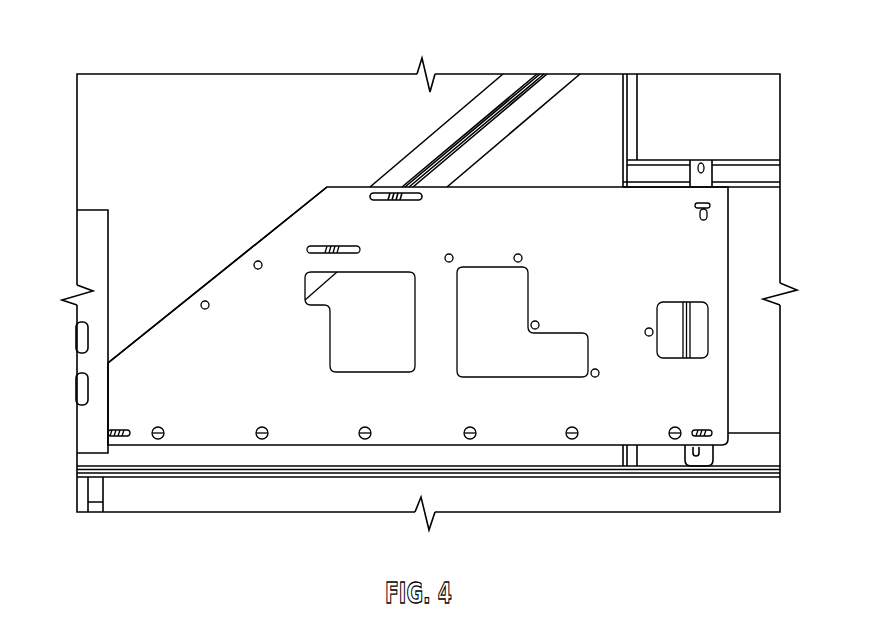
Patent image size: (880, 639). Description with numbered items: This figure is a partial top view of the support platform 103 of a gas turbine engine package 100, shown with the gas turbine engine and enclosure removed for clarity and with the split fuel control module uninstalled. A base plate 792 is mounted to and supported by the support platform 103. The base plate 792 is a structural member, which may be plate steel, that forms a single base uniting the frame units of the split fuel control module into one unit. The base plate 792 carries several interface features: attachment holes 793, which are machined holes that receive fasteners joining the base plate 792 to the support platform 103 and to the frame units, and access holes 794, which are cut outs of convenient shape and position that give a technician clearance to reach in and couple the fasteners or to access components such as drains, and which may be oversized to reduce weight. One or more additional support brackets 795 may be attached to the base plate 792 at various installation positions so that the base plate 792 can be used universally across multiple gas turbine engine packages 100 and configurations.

The gas turbine engine package 100 is at (141, 42).
The support platform 103 is at (350, 449).
The base plate 792 is at (162, 337).
The attachment holes 793 is at (204, 300).
The access holes 794 is at (393, 285).
The support brackets 795 is at (707, 170).